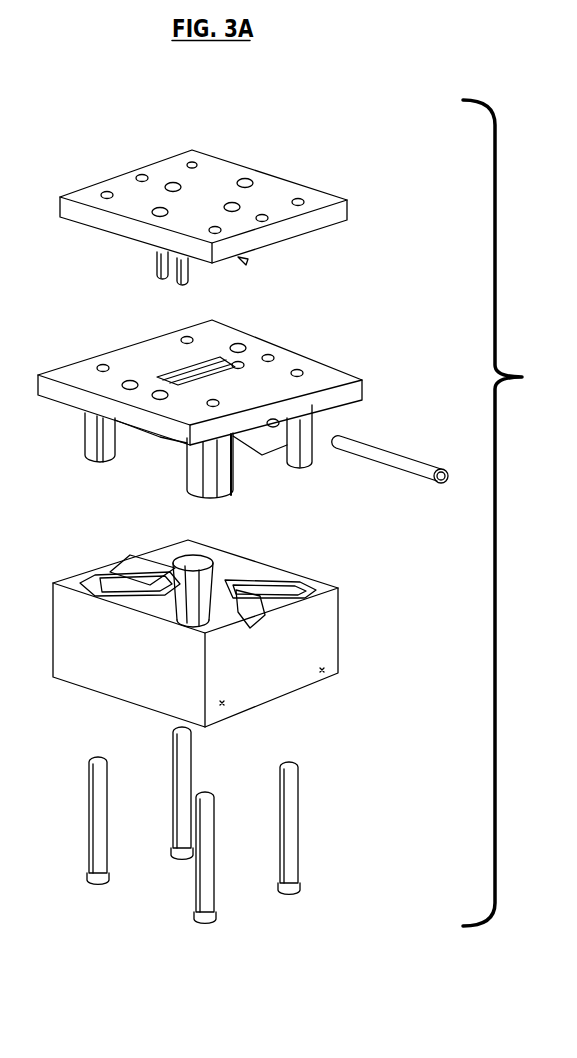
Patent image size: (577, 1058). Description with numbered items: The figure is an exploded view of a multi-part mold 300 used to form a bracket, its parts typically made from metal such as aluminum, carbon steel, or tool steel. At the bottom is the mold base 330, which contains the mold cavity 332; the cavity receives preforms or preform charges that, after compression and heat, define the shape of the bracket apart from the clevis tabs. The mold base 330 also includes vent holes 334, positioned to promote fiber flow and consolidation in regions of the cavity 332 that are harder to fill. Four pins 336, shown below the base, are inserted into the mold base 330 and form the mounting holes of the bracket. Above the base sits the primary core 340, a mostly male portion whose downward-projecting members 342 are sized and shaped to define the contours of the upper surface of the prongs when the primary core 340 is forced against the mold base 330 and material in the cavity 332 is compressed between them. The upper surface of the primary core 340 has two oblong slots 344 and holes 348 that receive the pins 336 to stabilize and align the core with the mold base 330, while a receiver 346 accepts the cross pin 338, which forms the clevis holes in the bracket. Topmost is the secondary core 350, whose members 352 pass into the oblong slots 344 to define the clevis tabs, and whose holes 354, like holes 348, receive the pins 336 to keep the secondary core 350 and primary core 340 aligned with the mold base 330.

The multi-part mold 300 is at (516, 513).
The mold base 330 is at (325, 640).
The mold cavity 332 is at (218, 572).
The vent holes 334 is at (333, 672).
The pins 336 is at (290, 800).
The cross pin 338 is at (387, 460).
The primary core 340 is at (297, 349).
The members 342 is at (197, 477).
The oblong slots 344 is at (175, 372).
The receiver 346 is at (283, 420).
The holes 348 is at (300, 373).
The secondary core 350 is at (222, 177).
The members 352 is at (160, 263).
The holes 354 is at (107, 195).